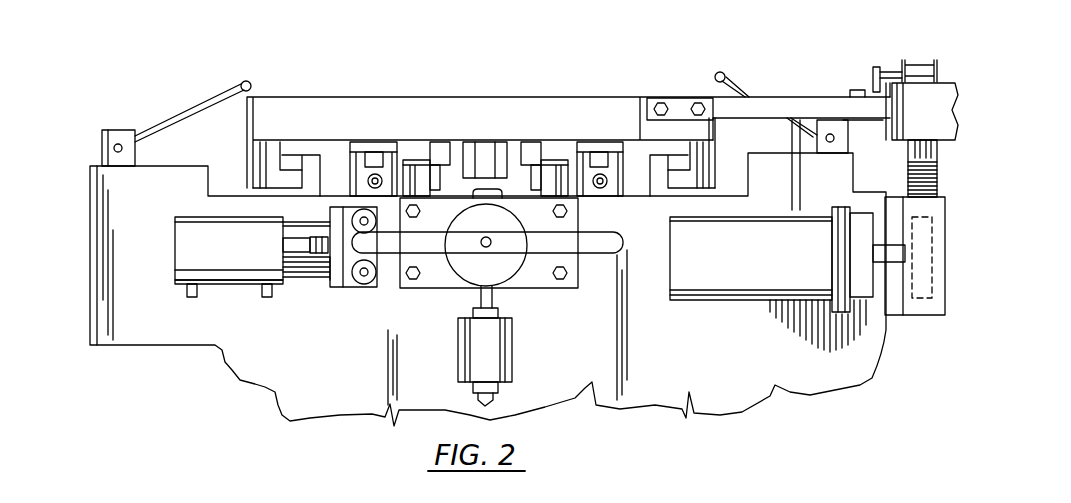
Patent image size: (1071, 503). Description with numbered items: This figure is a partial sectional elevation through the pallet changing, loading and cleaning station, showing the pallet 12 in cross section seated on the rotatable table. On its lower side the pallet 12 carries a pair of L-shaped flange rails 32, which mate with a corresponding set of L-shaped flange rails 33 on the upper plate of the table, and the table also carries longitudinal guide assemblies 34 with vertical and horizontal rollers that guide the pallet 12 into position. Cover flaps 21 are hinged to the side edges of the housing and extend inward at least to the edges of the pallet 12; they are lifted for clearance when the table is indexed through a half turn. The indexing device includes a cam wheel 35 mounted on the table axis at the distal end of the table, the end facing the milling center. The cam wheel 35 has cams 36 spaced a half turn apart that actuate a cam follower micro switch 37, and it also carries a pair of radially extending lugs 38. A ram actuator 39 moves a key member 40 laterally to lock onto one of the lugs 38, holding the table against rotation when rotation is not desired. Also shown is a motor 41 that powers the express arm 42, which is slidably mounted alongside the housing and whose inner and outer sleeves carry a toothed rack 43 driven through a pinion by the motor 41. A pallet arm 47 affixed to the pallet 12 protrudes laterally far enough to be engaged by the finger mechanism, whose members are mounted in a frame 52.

The pallet 12 is at (368, 104).
The cover flaps 21 is at (196, 110).
The L-shaped flange rails 32 is at (253, 155).
The mating L-shaped flange rails 33 is at (300, 167).
The longitudinal guide assemblies 34 is at (422, 160).
The cam wheel 35 is at (509, 258).
The cams 36 is at (486, 190).
The cam follower micro switch 37 is at (104, 148).
The radially extending lugs 38 is at (417, 242).
The ram actuator 39 is at (183, 243).
The key member 40 is at (335, 287).
The motor 41 is at (725, 278).
The express arm 42 is at (942, 97).
The toothed rack 43 is at (908, 176).
The pallet arm 47 is at (833, 103).
The frame 52 is at (353, 186).